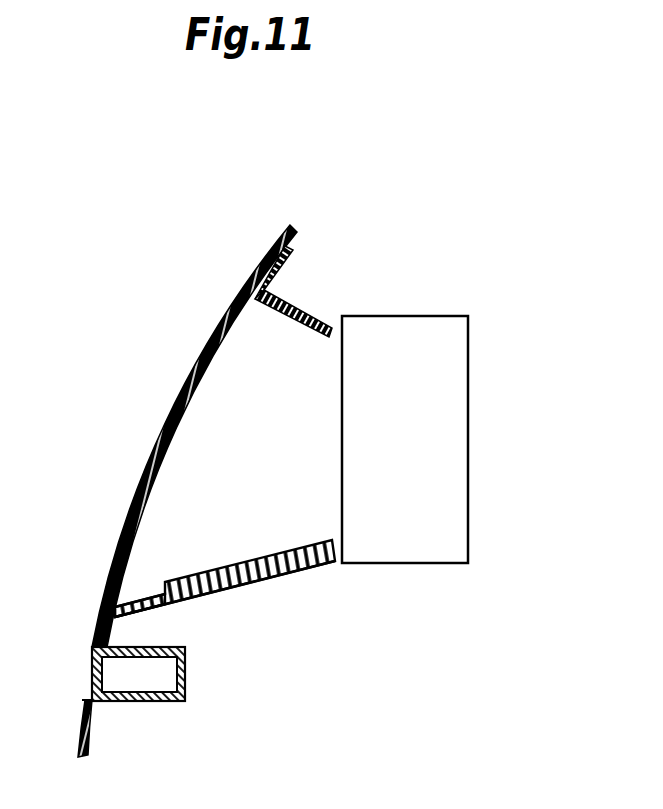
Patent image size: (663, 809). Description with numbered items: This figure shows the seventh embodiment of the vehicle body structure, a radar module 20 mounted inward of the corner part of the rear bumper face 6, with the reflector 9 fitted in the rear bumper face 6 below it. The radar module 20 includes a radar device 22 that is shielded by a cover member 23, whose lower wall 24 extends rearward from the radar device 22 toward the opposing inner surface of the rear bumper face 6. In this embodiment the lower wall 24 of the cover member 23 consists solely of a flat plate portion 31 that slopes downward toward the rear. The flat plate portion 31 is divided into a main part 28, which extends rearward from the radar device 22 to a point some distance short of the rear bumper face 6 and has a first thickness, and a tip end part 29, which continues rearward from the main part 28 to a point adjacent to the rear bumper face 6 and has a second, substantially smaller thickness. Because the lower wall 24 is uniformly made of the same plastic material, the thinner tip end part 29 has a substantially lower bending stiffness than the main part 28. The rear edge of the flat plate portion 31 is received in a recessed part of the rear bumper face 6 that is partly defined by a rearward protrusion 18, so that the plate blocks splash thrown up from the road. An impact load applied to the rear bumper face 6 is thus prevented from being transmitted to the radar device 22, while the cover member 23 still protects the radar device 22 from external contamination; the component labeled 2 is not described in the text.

The vehicle body 2 is at (166, 466).
The rear bumper face 6 is at (172, 412).
The reflector 9 is at (92, 677).
The rearward protrusion 18 is at (185, 675).
The radar module 20 is at (381, 371).
The radar device 22 is at (422, 327).
The cover member 23 is at (302, 296).
The lower wall 24 is at (203, 553).
The main part 28 is at (288, 580).
The tip end part 29 is at (135, 602).
The flat plate portion 31 is at (260, 563).